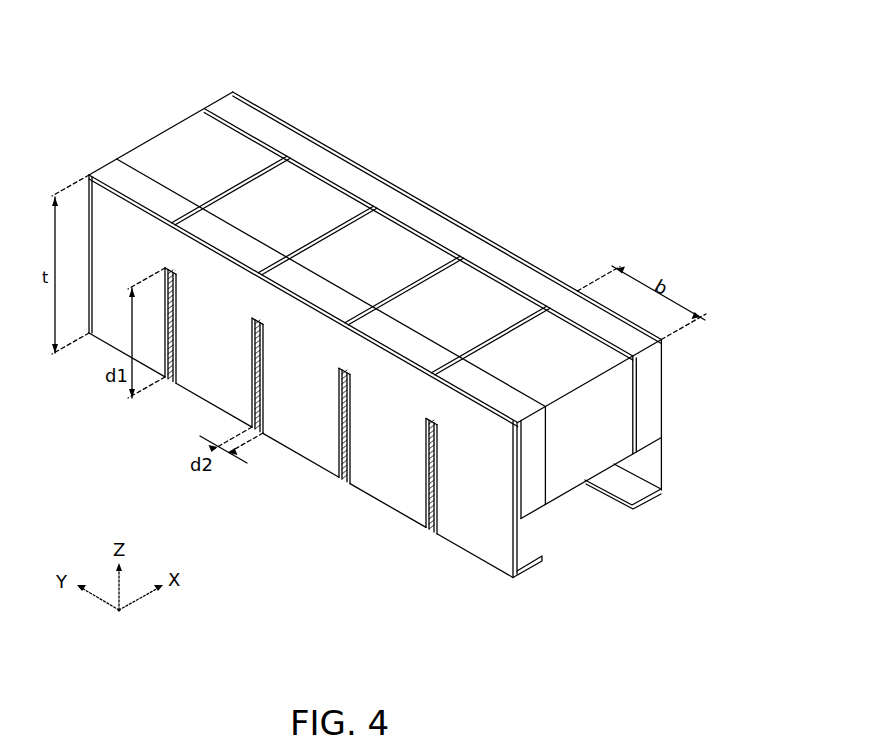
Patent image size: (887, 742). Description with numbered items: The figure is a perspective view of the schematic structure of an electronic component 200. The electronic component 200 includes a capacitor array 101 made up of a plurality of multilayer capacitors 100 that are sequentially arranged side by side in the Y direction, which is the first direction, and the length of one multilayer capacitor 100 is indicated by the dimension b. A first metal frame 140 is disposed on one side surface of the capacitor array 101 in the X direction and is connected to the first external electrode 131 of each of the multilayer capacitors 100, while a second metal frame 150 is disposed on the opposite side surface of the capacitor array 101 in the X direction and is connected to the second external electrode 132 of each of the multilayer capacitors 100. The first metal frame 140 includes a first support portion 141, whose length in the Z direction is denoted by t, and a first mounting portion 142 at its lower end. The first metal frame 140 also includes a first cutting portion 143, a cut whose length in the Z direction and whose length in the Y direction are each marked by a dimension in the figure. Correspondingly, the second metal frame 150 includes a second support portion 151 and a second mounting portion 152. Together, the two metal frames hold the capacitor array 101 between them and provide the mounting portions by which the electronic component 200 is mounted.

The electronic component 200 is at (504, 31).
The multilayer capacitor 100 is at (182, 157).
The capacitor array 101 is at (140, 147).
The first external electrode 131 is at (112, 172).
The second external electrode 132 is at (226, 106).
The first metal frame 140 is at (338, 401).
The first support portion 141 is at (484, 486).
The first mounting portion 142 is at (518, 557).
The first cutting portion 143 is at (426, 487).
The second metal frame 150 is at (662, 461).
The second support portion 151 is at (639, 458).
The second mounting portion 152 is at (668, 488).